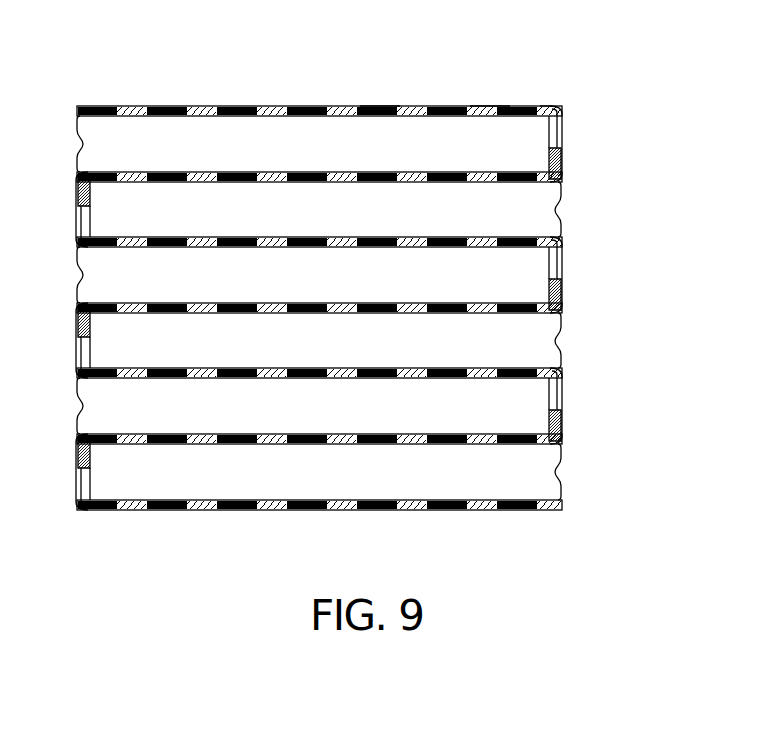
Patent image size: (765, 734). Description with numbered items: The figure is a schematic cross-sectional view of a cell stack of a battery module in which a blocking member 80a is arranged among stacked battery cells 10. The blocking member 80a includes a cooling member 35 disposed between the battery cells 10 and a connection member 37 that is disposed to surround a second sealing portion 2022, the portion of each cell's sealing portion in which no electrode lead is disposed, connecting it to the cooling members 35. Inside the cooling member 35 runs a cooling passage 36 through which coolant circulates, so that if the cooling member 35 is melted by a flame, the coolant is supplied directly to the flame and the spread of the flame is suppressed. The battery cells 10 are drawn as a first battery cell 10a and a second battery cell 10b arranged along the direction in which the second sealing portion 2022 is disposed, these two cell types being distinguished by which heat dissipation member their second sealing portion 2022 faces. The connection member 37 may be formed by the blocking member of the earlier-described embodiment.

The blocking member 80a is at (560, 52).
The cooling passage 36 is at (378, 106).
The cooling member 35 is at (486, 106).
The connection member 37 is at (563, 106).
The battery cell 10 is at (610, 171).
The first battery cell 10a is at (538, 202).
The second battery cell 10b is at (538, 128).
The second sealing portion 2022 is at (90, 460).